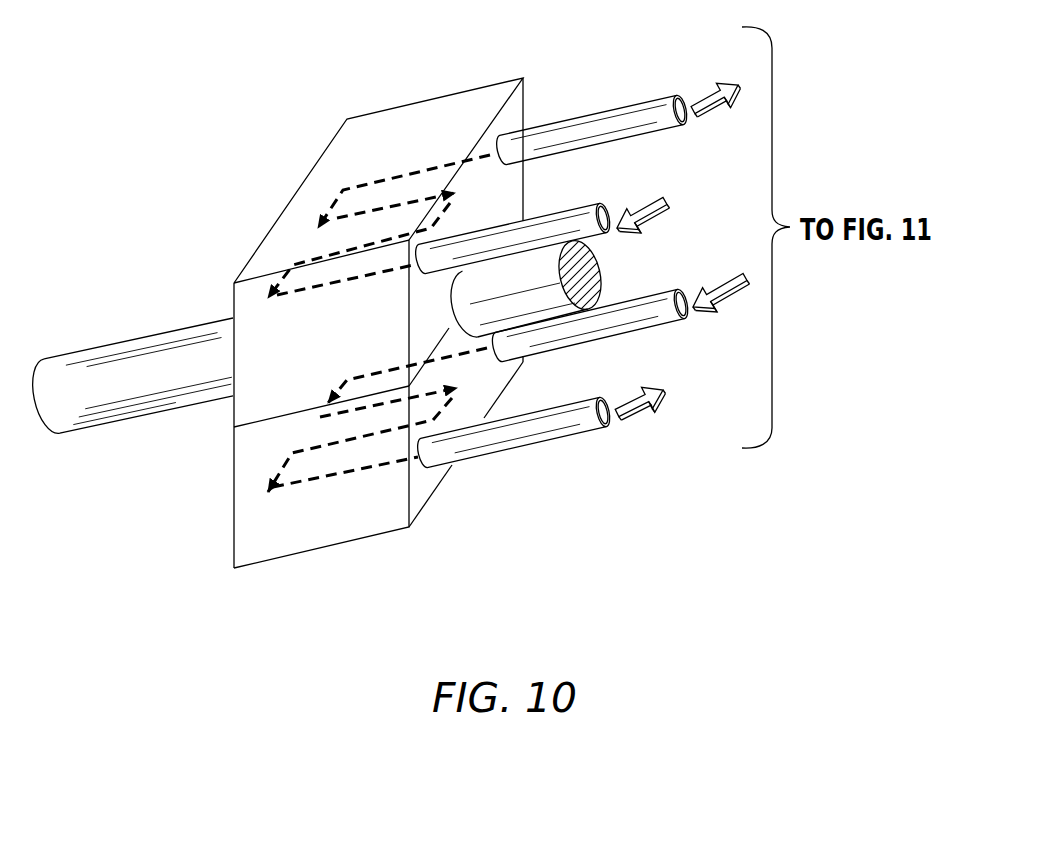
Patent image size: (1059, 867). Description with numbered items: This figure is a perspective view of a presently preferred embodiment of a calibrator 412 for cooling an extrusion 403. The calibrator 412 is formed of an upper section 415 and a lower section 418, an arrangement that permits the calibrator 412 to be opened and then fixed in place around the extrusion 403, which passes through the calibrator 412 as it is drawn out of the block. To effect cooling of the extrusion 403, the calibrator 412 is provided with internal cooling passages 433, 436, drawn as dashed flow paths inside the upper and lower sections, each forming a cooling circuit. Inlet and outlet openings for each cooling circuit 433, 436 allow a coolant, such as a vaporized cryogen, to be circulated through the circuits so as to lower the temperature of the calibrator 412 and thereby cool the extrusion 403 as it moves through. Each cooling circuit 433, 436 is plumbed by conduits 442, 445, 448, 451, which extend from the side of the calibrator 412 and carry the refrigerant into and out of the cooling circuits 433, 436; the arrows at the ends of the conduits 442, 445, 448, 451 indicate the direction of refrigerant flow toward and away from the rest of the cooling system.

The extrusion 403 is at (132, 371).
The calibrator 412 is at (292, 537).
The upper section 415 is at (233, 303).
The lower section 418 is at (233, 527).
The cooling passage 433 is at (410, 170).
The cooling passage 436 is at (333, 482).
The conduit 442 is at (597, 124).
The conduit 445 is at (555, 231).
The conduit 448 is at (618, 324).
The conduit 451 is at (517, 440).